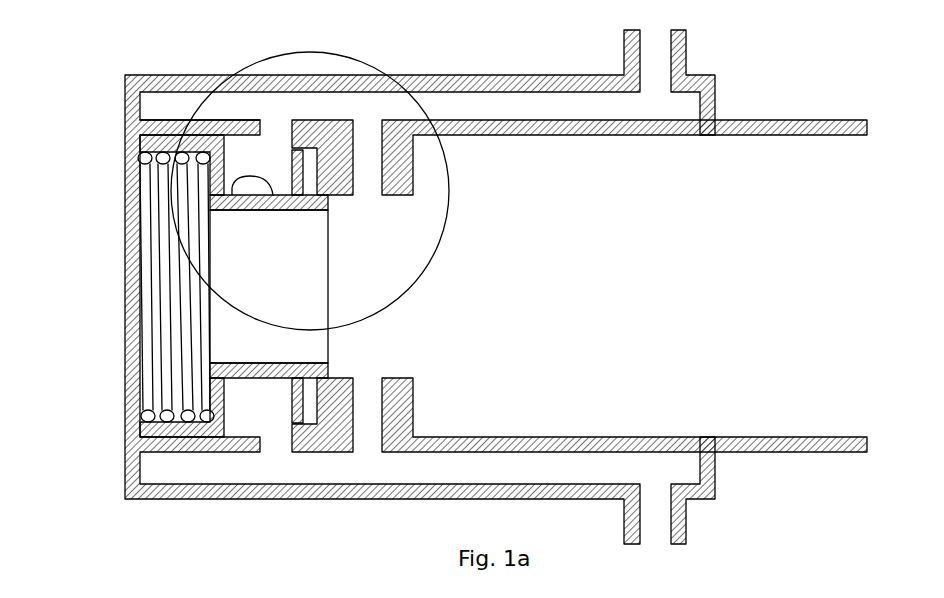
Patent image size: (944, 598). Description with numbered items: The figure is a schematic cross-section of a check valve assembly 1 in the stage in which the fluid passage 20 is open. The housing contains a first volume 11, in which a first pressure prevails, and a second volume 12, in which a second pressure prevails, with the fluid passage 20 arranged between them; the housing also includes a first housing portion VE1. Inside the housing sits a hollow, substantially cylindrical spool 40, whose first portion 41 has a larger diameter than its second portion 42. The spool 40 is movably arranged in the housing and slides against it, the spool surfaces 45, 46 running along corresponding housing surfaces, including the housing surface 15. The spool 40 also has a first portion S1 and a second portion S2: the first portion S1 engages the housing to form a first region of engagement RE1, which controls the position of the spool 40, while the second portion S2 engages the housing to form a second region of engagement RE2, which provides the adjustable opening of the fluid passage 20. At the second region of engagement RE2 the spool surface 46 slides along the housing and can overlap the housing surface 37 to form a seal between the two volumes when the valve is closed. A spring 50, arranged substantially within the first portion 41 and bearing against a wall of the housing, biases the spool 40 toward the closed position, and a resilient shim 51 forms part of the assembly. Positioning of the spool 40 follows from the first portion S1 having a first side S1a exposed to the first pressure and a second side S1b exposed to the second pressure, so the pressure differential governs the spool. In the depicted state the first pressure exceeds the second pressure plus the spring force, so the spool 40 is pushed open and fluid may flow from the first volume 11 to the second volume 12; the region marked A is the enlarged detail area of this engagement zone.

The check valve assembly 1 is at (781, 82).
The first volume 11 is at (433, 74).
The second volume 12 is at (517, 178).
The housing surface 15 is at (242, 121).
The fluid passage 20 is at (417, 97).
The housing surface 37 is at (398, 196).
The spool 40 is at (266, 394).
The first portion of the spool 41 is at (156, 435).
The second portion of the spool 42 is at (246, 386).
The spool surface 45 is at (135, 145).
The spool surface 46 is at (210, 188).
The spring 50 is at (155, 302).
The resilient shim 51 is at (280, 373).
The first housing portion VE1 is at (166, 102).
The first region of engagement RE1 is at (281, 124).
The second region of engagement RE2 is at (374, 219).
The first portion of the spool S1 is at (290, 394).
The first side S1a is at (362, 140).
The second side S1b is at (233, 178).
The second portion of the spool S2 is at (258, 390).
The detail region A is at (310, 191).